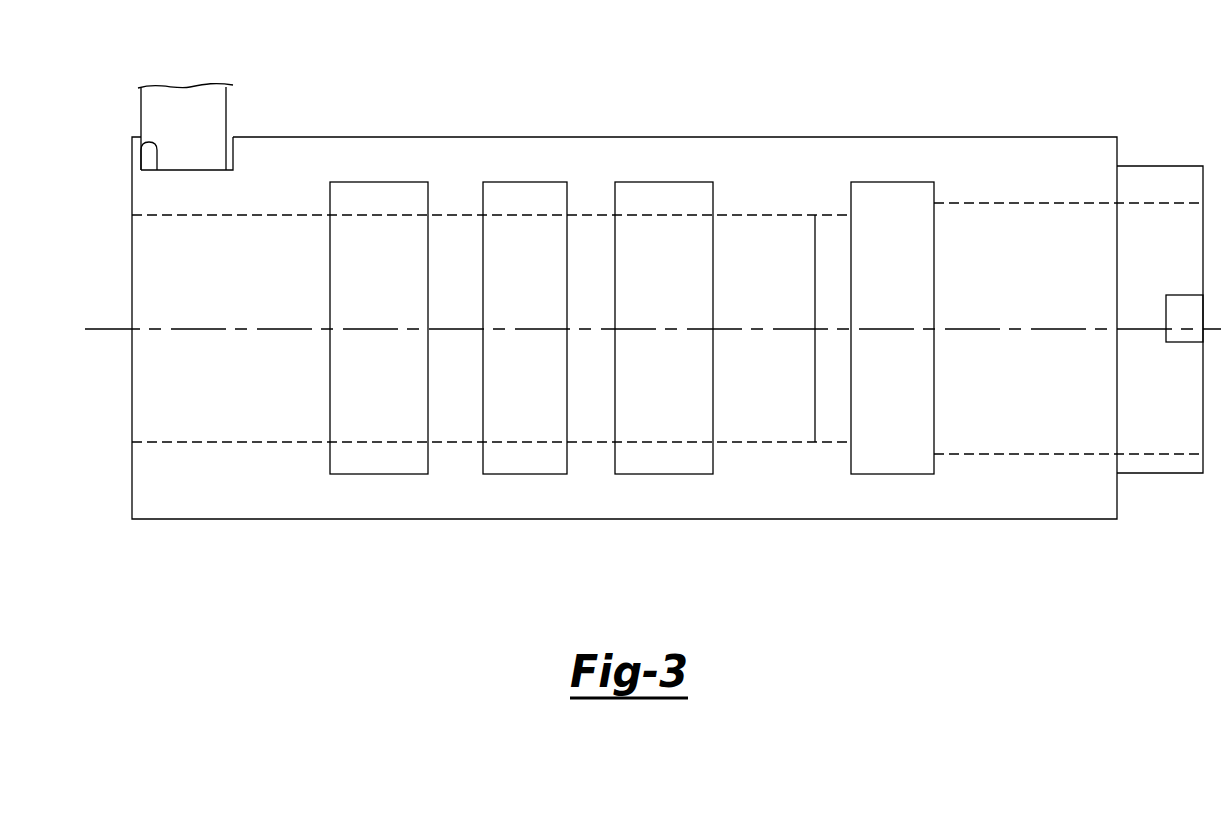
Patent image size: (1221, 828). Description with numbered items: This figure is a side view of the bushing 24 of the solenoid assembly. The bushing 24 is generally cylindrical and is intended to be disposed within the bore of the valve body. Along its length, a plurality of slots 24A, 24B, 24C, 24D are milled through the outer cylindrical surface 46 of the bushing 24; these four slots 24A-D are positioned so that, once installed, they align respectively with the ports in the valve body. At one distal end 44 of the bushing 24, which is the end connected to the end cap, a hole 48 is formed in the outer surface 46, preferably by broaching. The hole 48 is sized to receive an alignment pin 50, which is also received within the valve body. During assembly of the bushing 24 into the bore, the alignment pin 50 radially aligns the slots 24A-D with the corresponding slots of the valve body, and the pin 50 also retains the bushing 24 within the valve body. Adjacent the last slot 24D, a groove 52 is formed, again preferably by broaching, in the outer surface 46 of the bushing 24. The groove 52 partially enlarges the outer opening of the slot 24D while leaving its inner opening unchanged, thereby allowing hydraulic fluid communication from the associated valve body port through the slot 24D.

The bushing 24 is at (1036, 72).
The slot 24A is at (376, 247).
The slot 24B is at (528, 247).
The slot 24C is at (659, 247).
The slot 24D is at (896, 247).
The distal end 44 is at (134, 492).
The outer cylindrical surface 46 is at (813, 490).
The hole 48 is at (153, 144).
The alignment pin 50 is at (157, 112).
The groove 52 is at (824, 215).